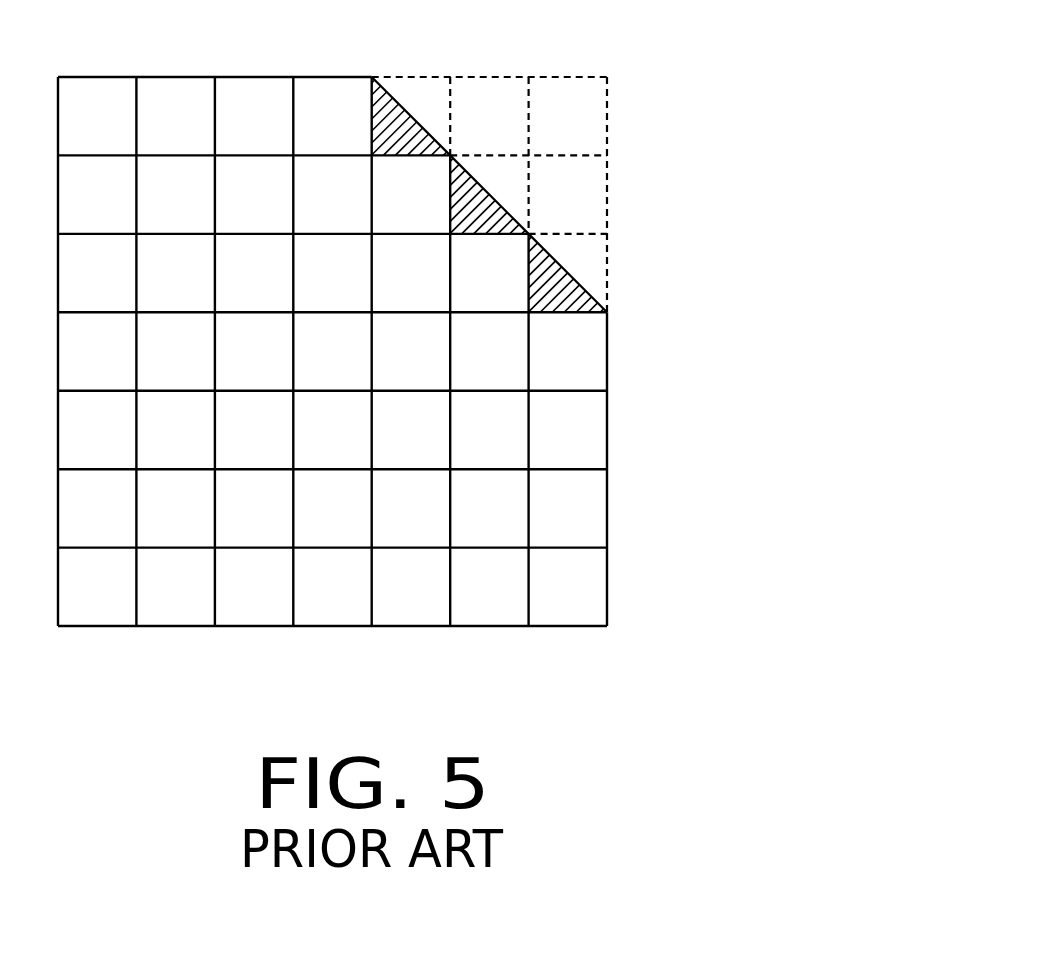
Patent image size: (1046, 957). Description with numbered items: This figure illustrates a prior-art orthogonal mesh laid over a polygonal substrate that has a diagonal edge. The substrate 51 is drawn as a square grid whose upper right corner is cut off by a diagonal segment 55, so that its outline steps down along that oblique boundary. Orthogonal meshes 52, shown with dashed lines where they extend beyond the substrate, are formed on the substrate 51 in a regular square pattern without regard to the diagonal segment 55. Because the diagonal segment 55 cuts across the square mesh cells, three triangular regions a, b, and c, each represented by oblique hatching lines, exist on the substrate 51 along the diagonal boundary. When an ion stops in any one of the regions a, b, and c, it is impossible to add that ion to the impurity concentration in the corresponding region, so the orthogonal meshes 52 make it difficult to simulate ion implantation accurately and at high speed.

The substrate 51 is at (610, 511).
The orthogonal meshes 52 is at (607, 110).
The diagonal segment 55 is at (500, 156).
The region a is at (413, 110).
The region b is at (489, 200).
The region c is at (563, 268).